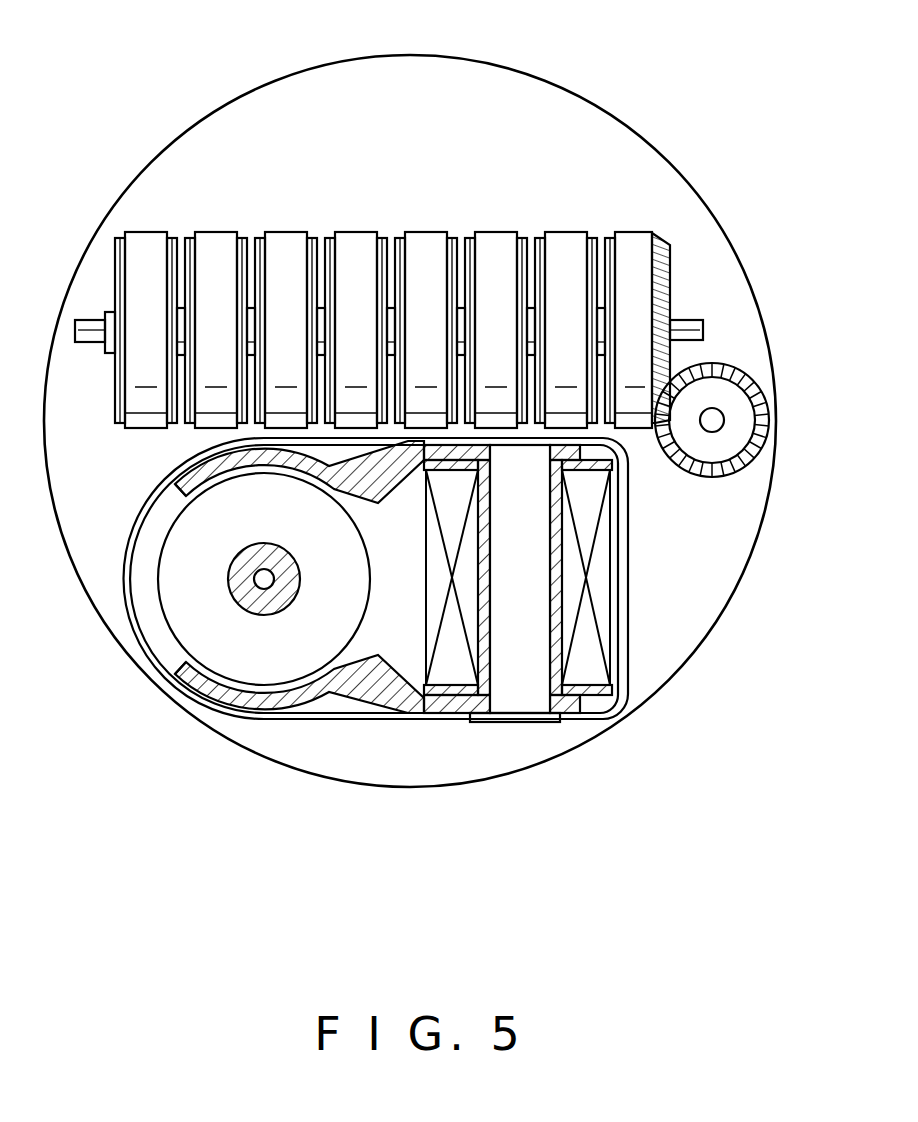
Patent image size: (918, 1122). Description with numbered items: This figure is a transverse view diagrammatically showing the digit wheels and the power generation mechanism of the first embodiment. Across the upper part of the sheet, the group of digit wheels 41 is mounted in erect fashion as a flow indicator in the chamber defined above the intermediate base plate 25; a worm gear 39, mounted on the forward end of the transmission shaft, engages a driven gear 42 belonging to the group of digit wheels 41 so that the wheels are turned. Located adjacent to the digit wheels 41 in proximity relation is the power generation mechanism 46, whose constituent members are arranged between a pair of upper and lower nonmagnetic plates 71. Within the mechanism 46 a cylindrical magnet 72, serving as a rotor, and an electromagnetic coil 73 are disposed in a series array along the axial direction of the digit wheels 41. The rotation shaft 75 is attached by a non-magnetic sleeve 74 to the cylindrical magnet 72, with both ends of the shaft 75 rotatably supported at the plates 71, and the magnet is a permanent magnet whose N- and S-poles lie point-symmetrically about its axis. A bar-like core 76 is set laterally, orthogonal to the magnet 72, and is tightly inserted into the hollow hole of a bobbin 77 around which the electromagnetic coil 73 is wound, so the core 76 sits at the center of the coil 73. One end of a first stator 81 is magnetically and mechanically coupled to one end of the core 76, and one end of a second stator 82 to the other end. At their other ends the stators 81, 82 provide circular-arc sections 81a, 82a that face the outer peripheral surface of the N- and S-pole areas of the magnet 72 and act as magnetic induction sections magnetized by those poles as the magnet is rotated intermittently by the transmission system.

The intermediate base plate 25 is at (495, 80).
The worm gear 39 is at (700, 476).
The digit wheels 41 is at (155, 240).
The driven gear 42 is at (670, 285).
The power generation mechanism 46 is at (382, 647).
The nonmagnetic plates 71 is at (296, 719).
The cylindrical magnet 72 is at (200, 625).
The electromagnetic coil 73 is at (607, 617).
The non-magnetic sleeve 74 is at (290, 572).
The rotation shaft 75 is at (255, 582).
The bar-like core 76 is at (558, 700).
The bobbin 77 is at (558, 580).
The first stator 81 is at (390, 478).
The circular-arc section of the first stator 81a is at (180, 478).
The second stator 82 is at (392, 700).
The circular-arc section of the second stator 82a is at (222, 718).